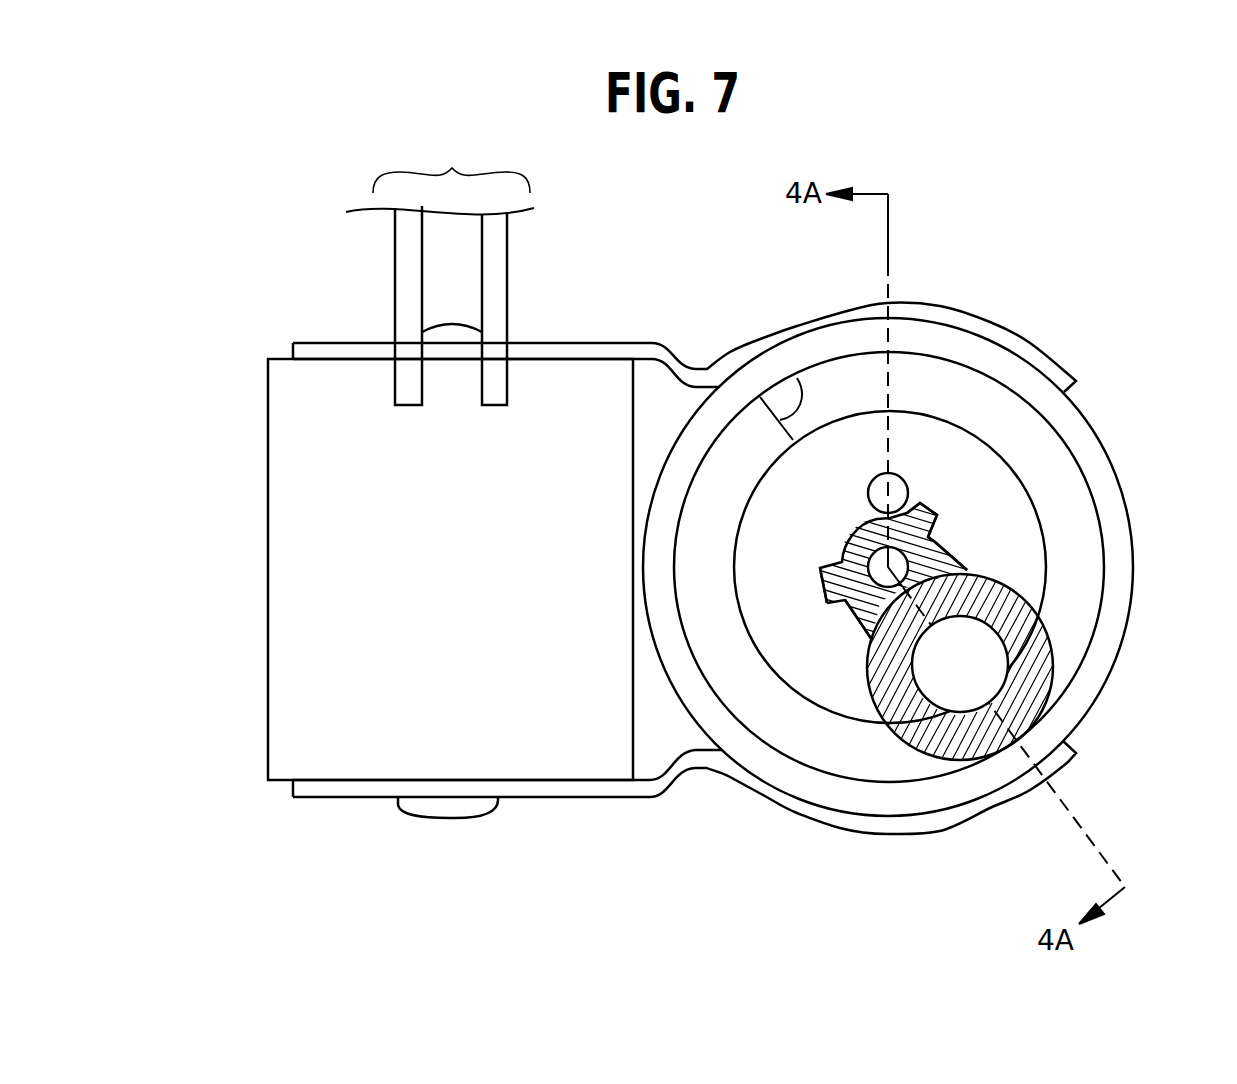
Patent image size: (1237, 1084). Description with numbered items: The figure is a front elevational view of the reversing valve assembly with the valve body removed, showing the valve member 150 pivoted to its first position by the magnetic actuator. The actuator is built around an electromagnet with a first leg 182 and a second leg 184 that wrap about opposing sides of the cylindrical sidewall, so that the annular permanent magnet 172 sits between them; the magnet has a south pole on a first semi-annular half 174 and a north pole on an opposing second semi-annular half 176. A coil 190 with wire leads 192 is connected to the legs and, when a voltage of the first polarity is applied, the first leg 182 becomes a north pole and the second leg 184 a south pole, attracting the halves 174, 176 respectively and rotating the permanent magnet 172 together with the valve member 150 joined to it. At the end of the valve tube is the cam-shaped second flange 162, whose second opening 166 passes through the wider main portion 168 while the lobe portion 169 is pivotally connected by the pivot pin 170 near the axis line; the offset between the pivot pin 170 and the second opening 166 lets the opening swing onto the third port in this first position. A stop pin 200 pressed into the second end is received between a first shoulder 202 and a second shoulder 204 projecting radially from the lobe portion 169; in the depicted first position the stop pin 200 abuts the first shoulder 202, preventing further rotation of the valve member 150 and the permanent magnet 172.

The valve member 150 is at (872, 606).
The second flange 162 is at (940, 577).
The second opening 166 is at (990, 695).
The main portion 168 is at (1005, 688).
The lobe portion 169 is at (905, 557).
The pivot pin 170 is at (923, 553).
The permanent magnet 172 is at (797, 377).
The first semi-annular half 174 is at (845, 377).
The second semi-annular half 176 is at (826, 757).
The first leg 182 is at (990, 313).
The second leg 184 is at (945, 838).
The coil 190 is at (268, 688).
The wire leads 192 is at (452, 168).
The stop pin 200 is at (903, 484).
The first shoulder 202 is at (935, 514).
The second shoulder 204 is at (835, 592).